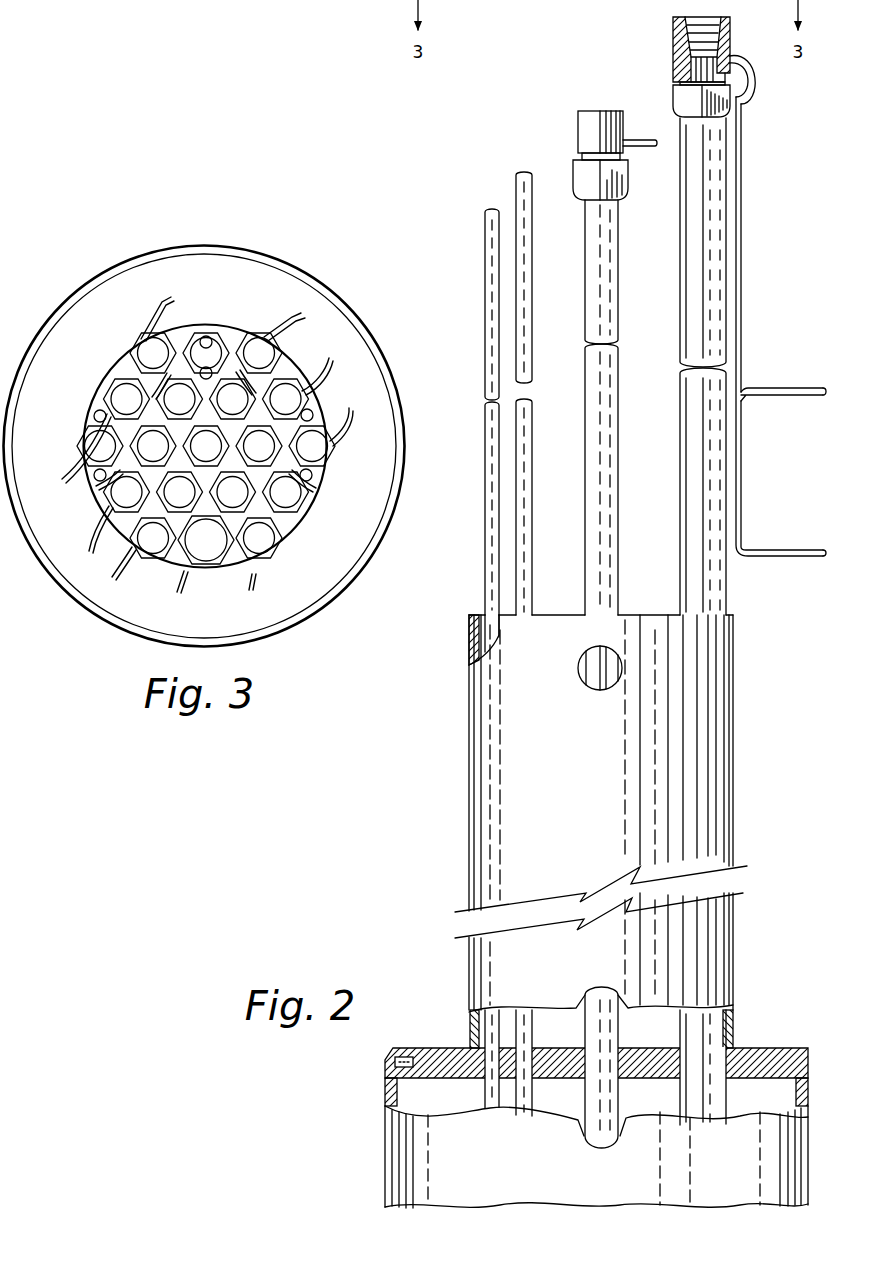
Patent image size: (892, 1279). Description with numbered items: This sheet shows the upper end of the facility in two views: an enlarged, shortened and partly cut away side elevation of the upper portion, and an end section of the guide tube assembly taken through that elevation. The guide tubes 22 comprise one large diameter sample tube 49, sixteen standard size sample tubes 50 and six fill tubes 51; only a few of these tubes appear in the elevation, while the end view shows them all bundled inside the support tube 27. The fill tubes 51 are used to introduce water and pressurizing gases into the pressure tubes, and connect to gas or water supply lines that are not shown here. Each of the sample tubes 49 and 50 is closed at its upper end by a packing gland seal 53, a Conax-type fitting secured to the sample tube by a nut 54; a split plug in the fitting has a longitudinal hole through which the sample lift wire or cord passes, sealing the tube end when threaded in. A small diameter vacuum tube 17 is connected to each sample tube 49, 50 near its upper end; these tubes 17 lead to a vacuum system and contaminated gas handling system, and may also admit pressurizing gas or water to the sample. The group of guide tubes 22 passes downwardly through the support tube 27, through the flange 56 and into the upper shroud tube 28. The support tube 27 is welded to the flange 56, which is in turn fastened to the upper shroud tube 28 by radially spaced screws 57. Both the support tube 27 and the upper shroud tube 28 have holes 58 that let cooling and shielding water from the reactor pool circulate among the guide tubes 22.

In FIG. 3, the vacuum tube 17 is at (170, 298).
In FIG. 2, the vacuum tube 17 is at (641, 148).
In FIG. 2, the guide tubes 22 is at (436, 164).
In FIG. 3, the support tube 27 is at (293, 533).
In FIG. 2, the support tube 27 is at (469, 745).
In FIG. 2, the upper shroud tube 28 is at (385, 1150).
In FIG. 3, the large diameter sample tube 49 is at (198, 549).
In FIG. 2, the large diameter sample tube 49 is at (680, 192).
In FIG. 3, the standard size sample tubes 50 is at (146, 361).
In FIG. 2, the standard size sample tubes 50 is at (585, 264).
In FIG. 3, the fill tubes 51 is at (207, 367).
In FIG. 2, the fill tubes 51 is at (488, 228).
In FIG. 2, the packing gland seal 53 is at (673, 42).
In FIG. 3, the nut 54 is at (108, 378).
In FIG. 2, the nut 54 is at (673, 96).
In FIG. 2, the flange 56 is at (429, 1048).
In FIG. 3, the screws 57 is at (109, 276).
In FIG. 2, the screws 57 is at (392, 1060).
In FIG. 2, the holes 58 is at (600, 690).